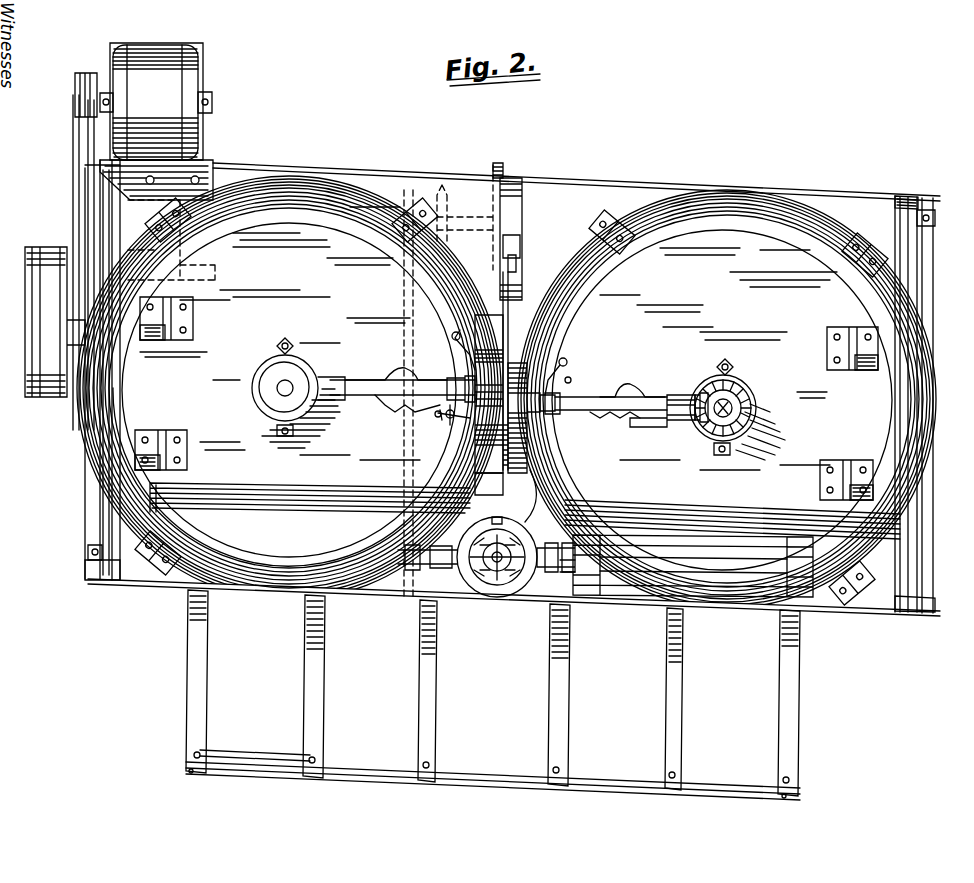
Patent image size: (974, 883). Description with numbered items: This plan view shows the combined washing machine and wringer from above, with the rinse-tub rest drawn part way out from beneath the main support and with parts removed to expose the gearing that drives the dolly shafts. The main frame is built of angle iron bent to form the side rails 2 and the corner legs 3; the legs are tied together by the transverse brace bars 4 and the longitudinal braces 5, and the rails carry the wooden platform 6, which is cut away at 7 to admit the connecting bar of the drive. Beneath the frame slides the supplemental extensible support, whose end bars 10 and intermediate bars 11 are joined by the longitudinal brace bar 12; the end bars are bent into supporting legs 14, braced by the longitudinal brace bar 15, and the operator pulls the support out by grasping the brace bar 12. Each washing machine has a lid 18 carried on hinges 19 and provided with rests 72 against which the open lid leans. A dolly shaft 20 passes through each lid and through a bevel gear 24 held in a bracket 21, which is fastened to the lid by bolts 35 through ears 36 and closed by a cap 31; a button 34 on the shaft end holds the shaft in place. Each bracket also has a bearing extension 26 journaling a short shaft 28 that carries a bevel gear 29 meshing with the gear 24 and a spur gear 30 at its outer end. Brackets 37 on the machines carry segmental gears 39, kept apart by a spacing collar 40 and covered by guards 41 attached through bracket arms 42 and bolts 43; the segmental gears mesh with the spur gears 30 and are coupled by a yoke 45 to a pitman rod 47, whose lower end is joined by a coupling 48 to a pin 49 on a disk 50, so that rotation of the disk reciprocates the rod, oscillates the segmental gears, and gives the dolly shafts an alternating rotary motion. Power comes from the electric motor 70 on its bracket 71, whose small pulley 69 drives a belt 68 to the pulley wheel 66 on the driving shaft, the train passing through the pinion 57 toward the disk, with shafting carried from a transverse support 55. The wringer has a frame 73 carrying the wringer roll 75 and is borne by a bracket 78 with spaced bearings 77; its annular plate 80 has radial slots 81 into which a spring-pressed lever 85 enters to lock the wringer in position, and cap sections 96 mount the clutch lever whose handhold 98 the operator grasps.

The side rails 2 is at (680, 185).
The corner legs 3 is at (922, 200).
The transverse angle iron brace bars 4 is at (87, 522).
The angle iron braces 5 is at (936, 218).
The platform 6 is at (511, 392).
The cut-away portion of platform 7 is at (522, 210).
The end bars 10 is at (196, 645).
The intermediate bars 11 is at (305, 711).
The longitudinal brace bar 12 is at (244, 755).
The supporting legs 14 is at (186, 762).
The longitudinal brace bar 15 is at (440, 782).
The lid or cover 18 is at (506, 392).
The hinges 19 is at (180, 345).
The dolly shaft 20 is at (740, 382).
The bracket 21 is at (358, 390).
The bevel gear wheel 24 is at (744, 398).
The angular bearing extension 26 is at (675, 422).
The short shaft 28 is at (452, 378).
The bevel gear 29 is at (705, 395).
The spur gear 30 is at (548, 380).
The cap or cover 31 is at (258, 405).
The button 34 is at (277, 382).
The bolts 35 is at (385, 410).
The ears 36 is at (380, 378).
The brackets 37 is at (454, 335).
The segmental gear 39 is at (530, 463).
The spacing collar 40 is at (536, 496).
The shield or guard 41 is at (487, 320).
The bracket arms 42 is at (448, 418).
The bolts 43 is at (437, 417).
The yoke 45 is at (524, 404).
The pitman bar or rod 47 is at (509, 285).
The coupling 48 is at (517, 261).
The pin 49 is at (520, 240).
The disk 50 is at (494, 158).
The transversely disposed support 55 is at (106, 493).
The pinion 57 is at (34, 305).
The pulley wheel 66 is at (72, 220).
The belt 68 is at (86, 155).
The small pulley wheel 69 is at (75, 96).
The electric motor 70 is at (203, 66).
The bracket 71 is at (200, 165).
The plates or rests 72 is at (147, 452).
The wringer frame support 73 is at (720, 585).
The wringer roll 75 is at (645, 555).
The spaced bearings 77 is at (412, 582).
The bracket 78 is at (577, 598).
The annular plate or flange 80 is at (478, 595).
The radial slots 81 is at (495, 600).
The lever 85 is at (395, 580).
The cap sections 96 is at (505, 592).
The handhold 98 is at (498, 598).